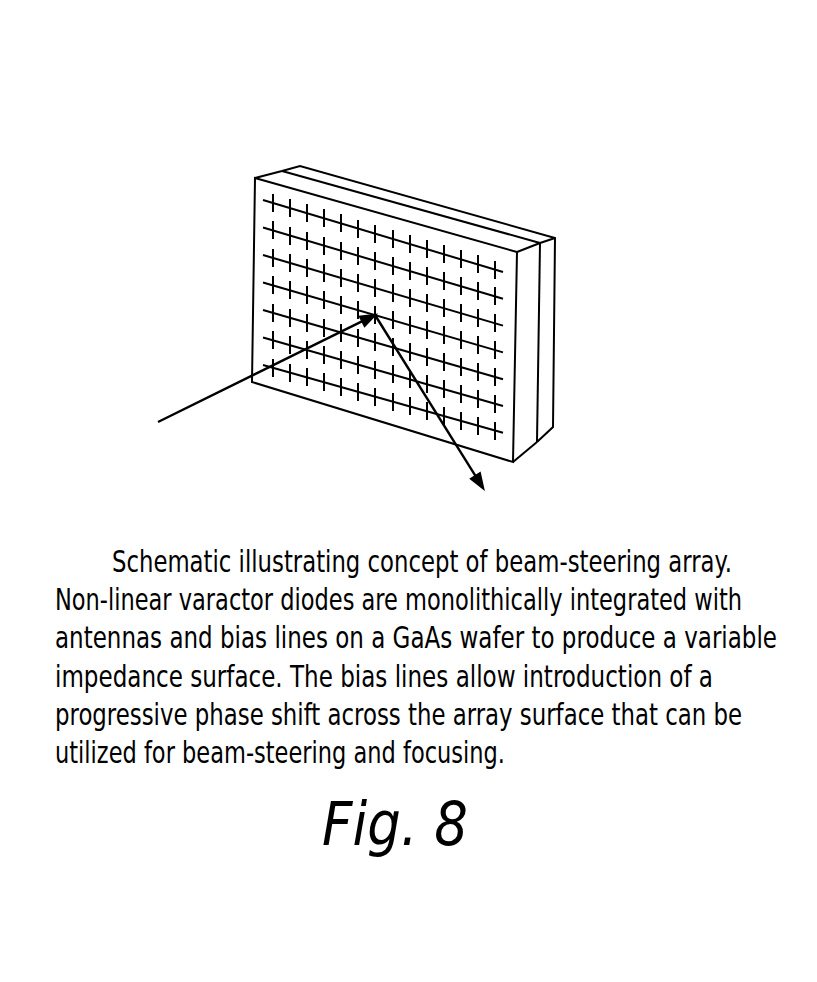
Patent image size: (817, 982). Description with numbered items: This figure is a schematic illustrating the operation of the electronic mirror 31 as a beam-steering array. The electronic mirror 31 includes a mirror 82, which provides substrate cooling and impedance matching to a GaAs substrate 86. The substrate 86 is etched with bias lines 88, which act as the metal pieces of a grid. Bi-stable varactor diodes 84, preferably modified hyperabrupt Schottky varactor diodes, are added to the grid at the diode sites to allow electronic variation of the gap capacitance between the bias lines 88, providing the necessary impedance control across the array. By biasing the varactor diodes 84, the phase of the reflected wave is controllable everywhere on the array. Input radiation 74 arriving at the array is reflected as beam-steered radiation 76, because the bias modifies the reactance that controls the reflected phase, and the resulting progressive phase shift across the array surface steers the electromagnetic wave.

The electronic mirror 31 is at (775, 375).
The input radiation 74 is at (138, 478).
The beam-steered radiation 76 is at (495, 520).
The mirror 82 is at (697, 196).
The bi-stable varactor diodes 84 is at (494, 370).
The GaAs substrate 86 is at (240, 216).
The bias lines 88 is at (317, 143).